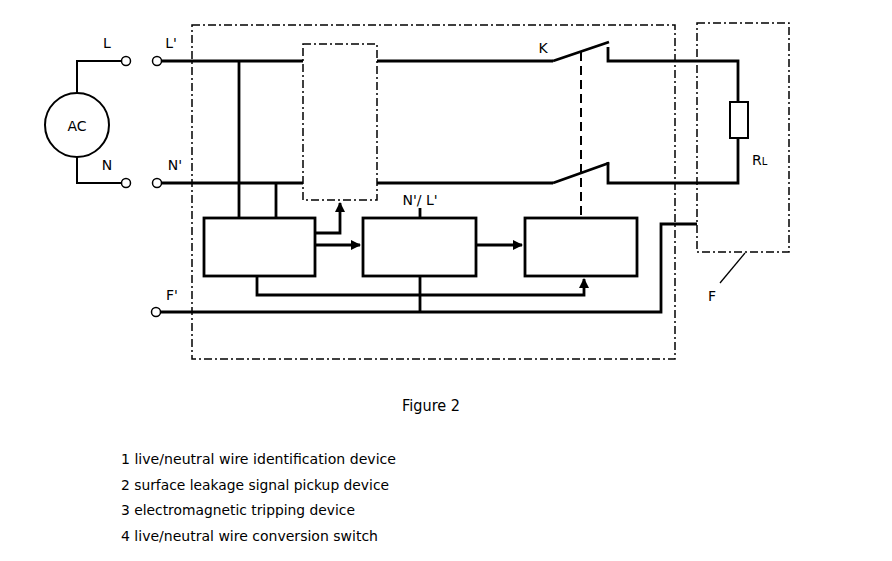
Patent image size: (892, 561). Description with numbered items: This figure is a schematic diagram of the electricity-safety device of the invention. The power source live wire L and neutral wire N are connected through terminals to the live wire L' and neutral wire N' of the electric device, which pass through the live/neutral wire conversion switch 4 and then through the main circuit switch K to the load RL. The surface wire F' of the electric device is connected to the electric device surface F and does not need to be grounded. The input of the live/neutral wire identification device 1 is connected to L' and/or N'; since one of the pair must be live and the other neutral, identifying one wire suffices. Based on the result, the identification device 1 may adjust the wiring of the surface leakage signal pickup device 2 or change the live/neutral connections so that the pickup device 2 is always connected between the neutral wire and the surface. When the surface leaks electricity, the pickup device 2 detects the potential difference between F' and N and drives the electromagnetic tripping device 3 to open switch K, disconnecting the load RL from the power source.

The live/neutral wire identification device 1 is at (252, 268).
The surface leakage signal pickup device 2 is at (412, 270).
The electromagnetic tripping device 3 is at (580, 272).
The live/neutral wire conversion switch 4 is at (303, 118).